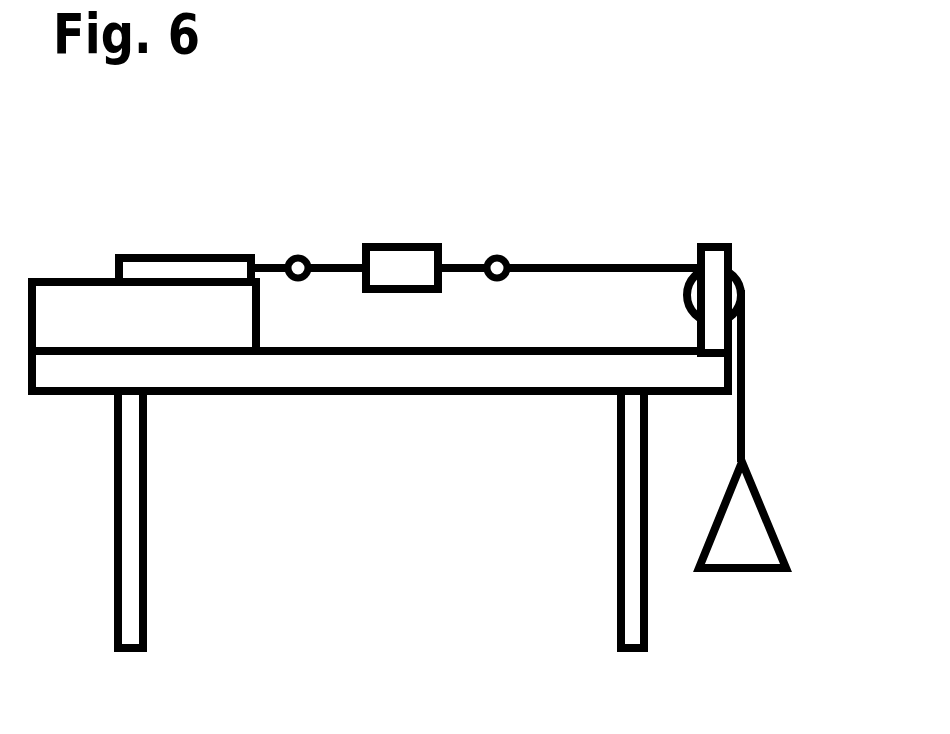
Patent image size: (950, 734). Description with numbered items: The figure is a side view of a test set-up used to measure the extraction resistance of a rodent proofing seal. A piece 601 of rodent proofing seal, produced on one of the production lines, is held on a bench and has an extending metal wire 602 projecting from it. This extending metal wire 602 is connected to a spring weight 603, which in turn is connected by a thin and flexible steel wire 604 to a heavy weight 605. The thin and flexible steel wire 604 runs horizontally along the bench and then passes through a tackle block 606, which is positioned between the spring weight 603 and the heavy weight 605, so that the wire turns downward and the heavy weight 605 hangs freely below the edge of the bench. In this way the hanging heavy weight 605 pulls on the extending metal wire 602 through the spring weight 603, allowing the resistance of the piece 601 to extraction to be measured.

The piece of rodent proofing seal 601 is at (177, 257).
The extending metal wire 602 is at (273, 264).
The spring weight 603 is at (400, 243).
The thin and flexible steel wire 604 is at (757, 352).
The heavy weight 605 is at (715, 510).
The tackle block 606 is at (715, 243).